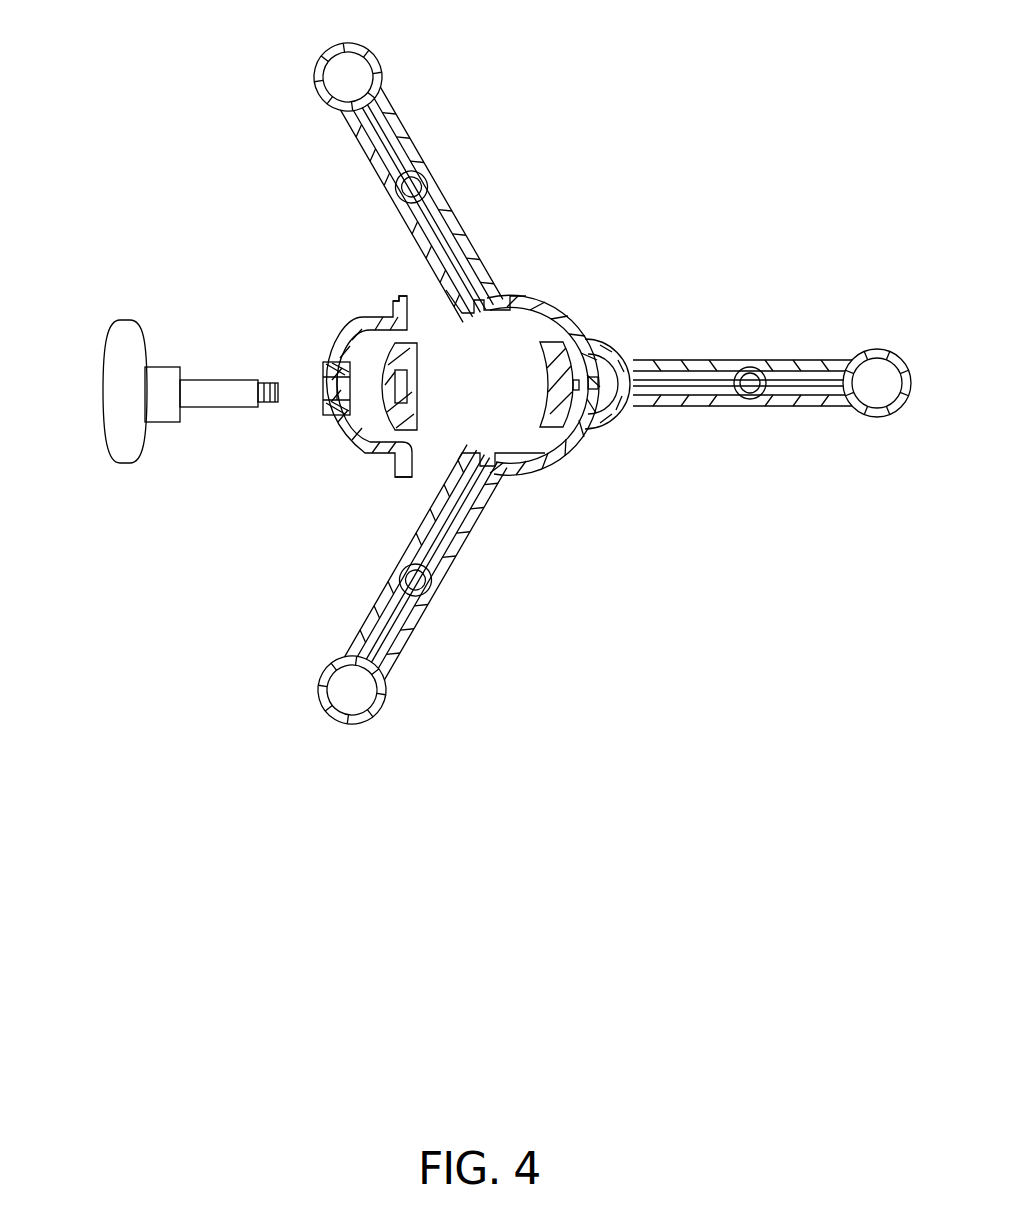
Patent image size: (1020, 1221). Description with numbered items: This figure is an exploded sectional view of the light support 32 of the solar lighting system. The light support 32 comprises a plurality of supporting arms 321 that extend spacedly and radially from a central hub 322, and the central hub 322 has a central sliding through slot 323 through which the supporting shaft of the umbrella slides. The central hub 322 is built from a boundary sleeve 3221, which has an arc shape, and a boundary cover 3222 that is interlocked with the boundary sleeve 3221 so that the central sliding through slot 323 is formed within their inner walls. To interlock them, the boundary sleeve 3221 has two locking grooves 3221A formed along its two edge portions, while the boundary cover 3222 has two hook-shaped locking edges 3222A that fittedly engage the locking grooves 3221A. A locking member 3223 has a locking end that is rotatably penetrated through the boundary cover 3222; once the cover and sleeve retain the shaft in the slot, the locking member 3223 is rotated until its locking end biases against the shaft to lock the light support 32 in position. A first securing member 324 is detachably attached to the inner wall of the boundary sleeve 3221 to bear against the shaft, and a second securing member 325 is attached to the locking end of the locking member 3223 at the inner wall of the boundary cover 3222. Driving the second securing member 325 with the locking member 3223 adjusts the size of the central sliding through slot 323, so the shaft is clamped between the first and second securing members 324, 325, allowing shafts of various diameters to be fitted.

The light support 32 is at (804, 239).
The supporting arm 321 is at (405, 126).
The central hub 322 is at (710, 212).
The boundary sleeve 3221 is at (589, 335).
The locking groove 3221A is at (488, 302).
The boundary cover 3222 is at (387, 452).
The locking edge 3222A is at (399, 294).
The locking member 3223 is at (133, 463).
The central sliding through slot 323 is at (503, 426).
The first securing member 324 is at (560, 397).
The second securing member 325 is at (405, 420).